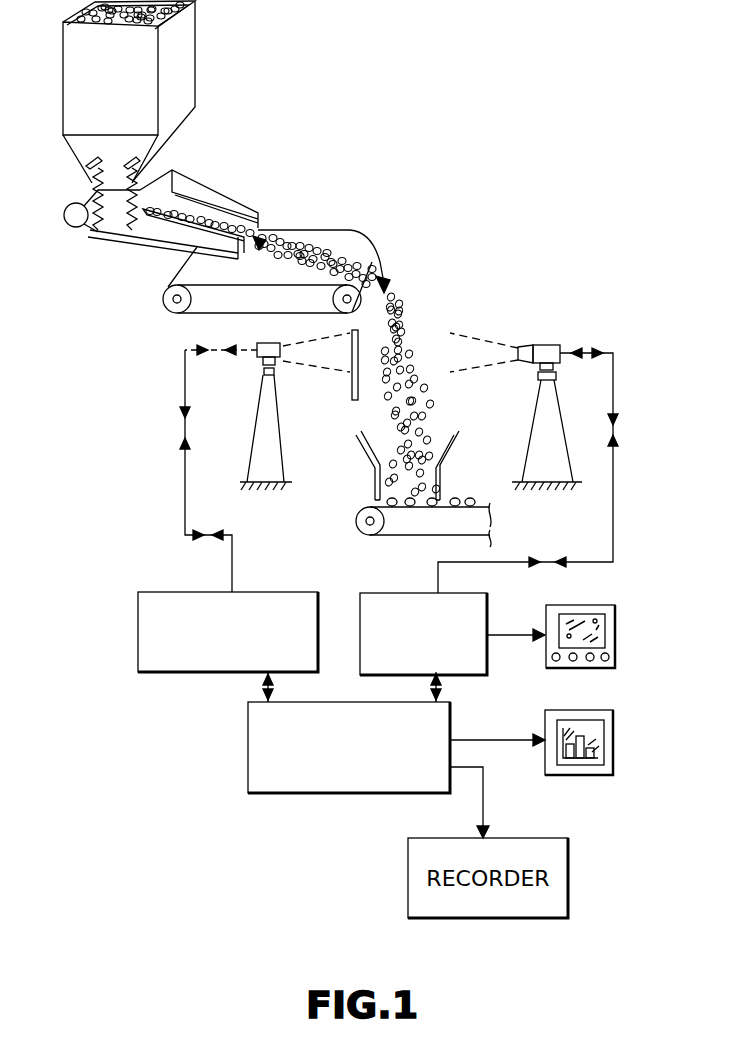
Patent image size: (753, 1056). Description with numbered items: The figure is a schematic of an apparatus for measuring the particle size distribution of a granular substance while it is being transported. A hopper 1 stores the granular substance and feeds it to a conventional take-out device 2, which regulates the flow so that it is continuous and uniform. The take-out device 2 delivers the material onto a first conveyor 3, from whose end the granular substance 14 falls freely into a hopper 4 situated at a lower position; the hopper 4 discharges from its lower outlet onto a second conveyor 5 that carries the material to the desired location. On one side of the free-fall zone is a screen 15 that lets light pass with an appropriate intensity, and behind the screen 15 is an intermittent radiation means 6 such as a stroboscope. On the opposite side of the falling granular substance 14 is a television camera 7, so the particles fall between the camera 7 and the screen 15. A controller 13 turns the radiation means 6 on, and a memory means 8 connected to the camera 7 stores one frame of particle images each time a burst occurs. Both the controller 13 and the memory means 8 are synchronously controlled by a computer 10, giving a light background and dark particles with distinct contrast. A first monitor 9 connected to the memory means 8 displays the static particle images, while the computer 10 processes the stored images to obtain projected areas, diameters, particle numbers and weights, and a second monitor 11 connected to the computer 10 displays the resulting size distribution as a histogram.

The hopper 1 is at (190, 53).
The take-out device 2 is at (216, 214).
The first conveyor 3 is at (363, 236).
The hopper 4 is at (455, 450).
The second conveyor 5 is at (483, 508).
The intermittent radiation means 6 is at (257, 345).
The television camera 7 is at (546, 348).
The memory means 8 is at (488, 599).
The first monitor 9 is at (618, 620).
The computer 10 is at (246, 762).
The second monitor 11 is at (617, 765).
The controller 13 is at (258, 592).
The granular substance 14 is at (401, 328).
The screen 15 is at (352, 382).